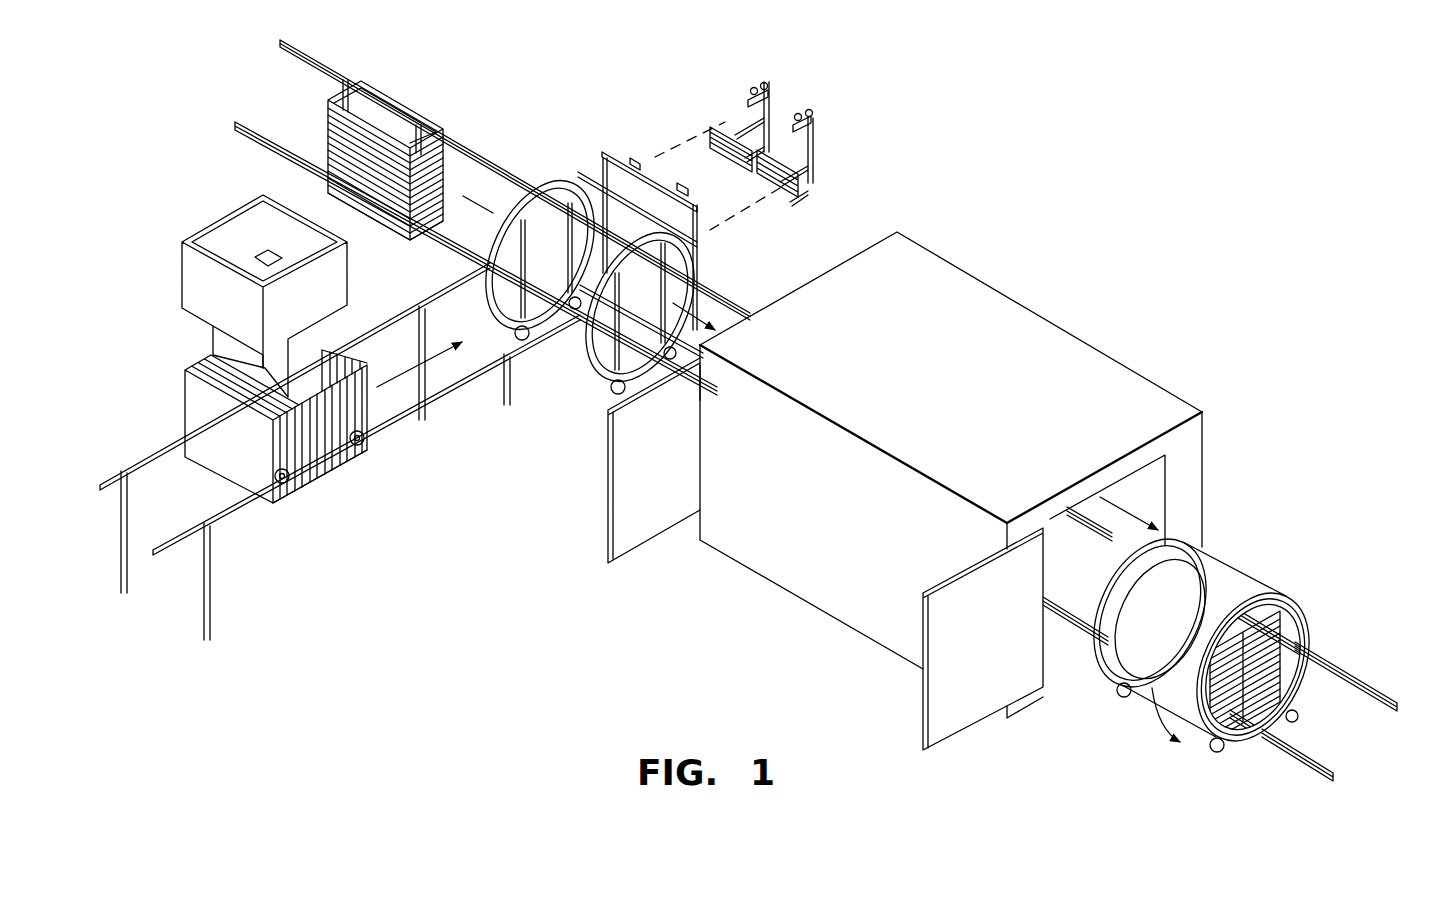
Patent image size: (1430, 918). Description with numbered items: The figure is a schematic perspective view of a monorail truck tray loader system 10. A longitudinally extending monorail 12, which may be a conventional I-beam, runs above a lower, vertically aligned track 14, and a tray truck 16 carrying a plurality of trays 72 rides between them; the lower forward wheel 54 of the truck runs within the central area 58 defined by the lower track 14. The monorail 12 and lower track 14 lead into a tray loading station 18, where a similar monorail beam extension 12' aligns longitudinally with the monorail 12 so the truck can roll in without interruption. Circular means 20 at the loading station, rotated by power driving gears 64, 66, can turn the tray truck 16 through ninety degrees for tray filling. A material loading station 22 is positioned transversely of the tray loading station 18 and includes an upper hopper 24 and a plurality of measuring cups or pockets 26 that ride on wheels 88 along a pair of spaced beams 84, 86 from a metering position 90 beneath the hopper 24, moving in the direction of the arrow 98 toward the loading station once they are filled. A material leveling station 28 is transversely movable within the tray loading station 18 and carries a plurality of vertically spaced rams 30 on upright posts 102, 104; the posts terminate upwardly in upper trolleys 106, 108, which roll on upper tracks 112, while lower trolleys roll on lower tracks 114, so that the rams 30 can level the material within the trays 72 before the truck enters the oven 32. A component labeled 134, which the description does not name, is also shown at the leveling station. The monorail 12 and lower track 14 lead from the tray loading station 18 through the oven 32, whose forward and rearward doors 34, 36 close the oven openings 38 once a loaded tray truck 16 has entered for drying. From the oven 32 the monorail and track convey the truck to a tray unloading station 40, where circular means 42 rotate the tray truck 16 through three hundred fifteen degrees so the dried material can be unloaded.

The monorail truck tray loader system 10 is at (805, 247).
The monorail 12 is at (845, 368).
The monorail beam extension 12' is at (608, 228).
The lower guide track 14 is at (290, 158).
The tray truck 16 is at (325, 118).
The tray loading station 18 is at (583, 147).
The circular means 20 is at (682, 237).
The material loading station 22 is at (186, 329).
The hopper 24 is at (228, 233).
The measuring cups 26 is at (185, 357).
The material leveling station 28 is at (797, 135).
The rams 30 is at (723, 130).
The oven 32 is at (975, 275).
The forward door 34 is at (974, 618).
The rearward door 36 is at (655, 523).
The oven openings 38 is at (1142, 490).
The tray unloading station 40 is at (1147, 693).
The circular means 42 is at (1207, 553).
The lower forward wheel 54 is at (428, 233).
The central area 58 is at (811, 507).
The power driving gear 64 is at (700, 383).
The power driving gear 66 is at (610, 395).
The trays 72 is at (380, 153).
The beam 84 is at (468, 312).
The beam 86 is at (453, 387).
The wheels 88 is at (367, 437).
The metering position 90 is at (338, 477).
The arrow 98 is at (407, 367).
The upright post 102 is at (815, 137).
The upright post 104 is at (770, 110).
The upper trolley 106 is at (813, 117).
The upper trolley 108 is at (768, 97).
The upper tracks 112 is at (640, 150).
The lower tracks 114 is at (568, 327).
The clamp bar 134 is at (742, 130).